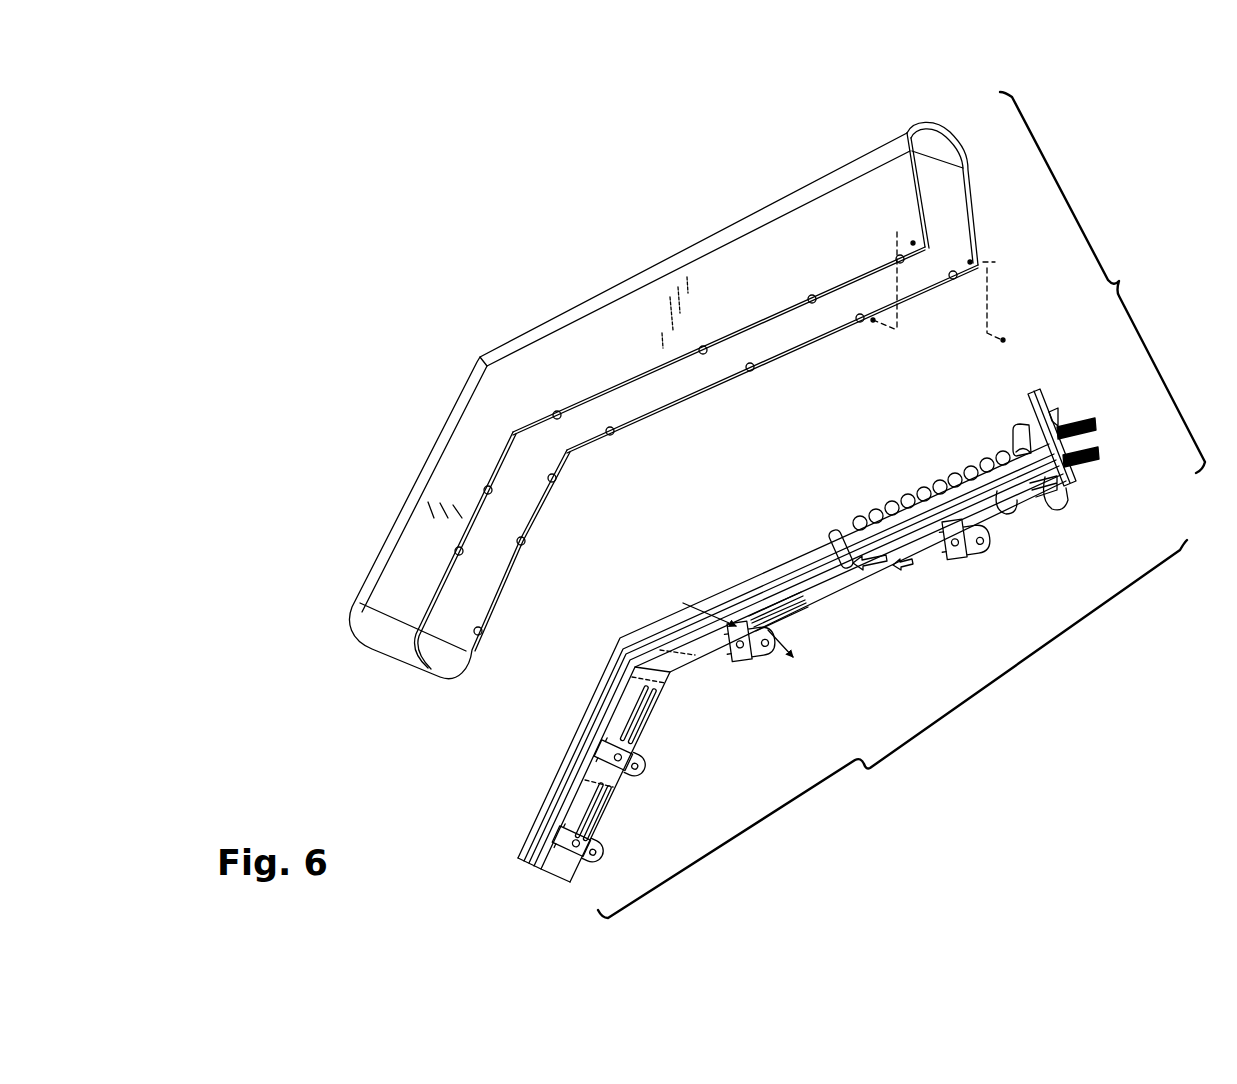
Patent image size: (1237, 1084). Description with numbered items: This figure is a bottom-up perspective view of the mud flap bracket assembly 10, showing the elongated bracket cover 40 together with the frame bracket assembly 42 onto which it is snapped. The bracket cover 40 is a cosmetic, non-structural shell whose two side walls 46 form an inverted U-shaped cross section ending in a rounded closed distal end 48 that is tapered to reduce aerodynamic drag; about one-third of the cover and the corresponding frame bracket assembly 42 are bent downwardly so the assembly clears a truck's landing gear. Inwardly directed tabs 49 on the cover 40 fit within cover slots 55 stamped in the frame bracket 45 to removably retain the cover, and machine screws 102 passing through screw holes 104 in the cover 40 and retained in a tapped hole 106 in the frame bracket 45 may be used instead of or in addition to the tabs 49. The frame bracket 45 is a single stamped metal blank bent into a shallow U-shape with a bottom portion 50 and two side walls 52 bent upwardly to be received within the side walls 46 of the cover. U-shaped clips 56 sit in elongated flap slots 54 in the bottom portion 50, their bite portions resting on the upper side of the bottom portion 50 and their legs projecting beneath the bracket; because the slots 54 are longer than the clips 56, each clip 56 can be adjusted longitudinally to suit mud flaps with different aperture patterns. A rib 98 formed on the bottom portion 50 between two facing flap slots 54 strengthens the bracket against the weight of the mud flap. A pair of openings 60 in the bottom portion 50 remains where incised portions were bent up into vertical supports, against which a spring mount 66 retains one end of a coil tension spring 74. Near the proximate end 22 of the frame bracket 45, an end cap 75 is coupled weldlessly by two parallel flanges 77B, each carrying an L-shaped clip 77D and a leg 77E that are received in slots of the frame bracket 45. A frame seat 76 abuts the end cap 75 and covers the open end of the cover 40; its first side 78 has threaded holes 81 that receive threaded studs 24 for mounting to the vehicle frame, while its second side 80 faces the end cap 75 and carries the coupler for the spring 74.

The mud flap bracket assembly 10 is at (1102, 282).
The proximate end 22 is at (972, 206).
The threaded studs 24 is at (1101, 424).
The bracket cover 40 is at (591, 284).
The frame bracket assembly 42 is at (892, 729).
The frame bracket 45 is at (825, 609).
The side walls 46 is at (745, 263).
The rounded closed distal end 48 is at (388, 643).
The inwardly directed tabs 49 is at (813, 293).
The bottom portion 50 is at (826, 593).
The side walls 52 is at (649, 643).
The flap slots 54 is at (640, 718).
The cover slots 55 is at (607, 674).
The U-shaped clips 56 is at (742, 664).
The openings 60 is at (857, 562).
The spring mount 66 is at (826, 532).
The coil tension spring 74 is at (917, 488).
The end cap 75 is at (975, 413).
The frame seat 76 is at (1038, 386).
The flanges 77B is at (1012, 436).
The L-shaped clip 77D is at (1054, 506).
The leg 77E is at (1003, 494).
The first side 78 is at (1076, 421).
The second side 80 is at (1028, 404).
The threaded holes 81 is at (1056, 414).
The rib 98 is at (788, 622).
The machine screws 102 is at (872, 323).
The screw holes 104 is at (912, 242).
The tapped hole 106 is at (1015, 450).